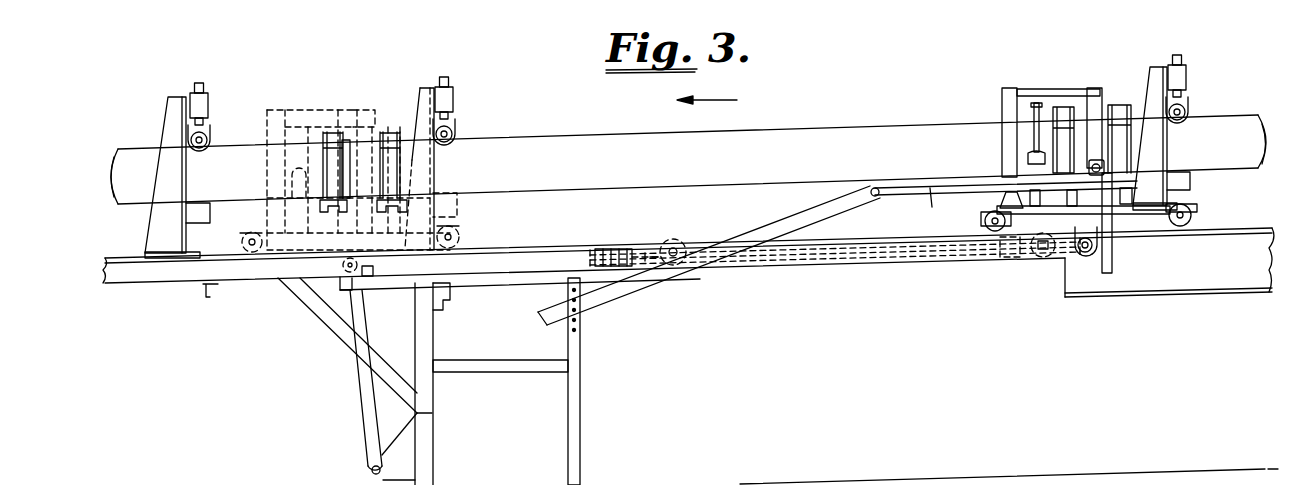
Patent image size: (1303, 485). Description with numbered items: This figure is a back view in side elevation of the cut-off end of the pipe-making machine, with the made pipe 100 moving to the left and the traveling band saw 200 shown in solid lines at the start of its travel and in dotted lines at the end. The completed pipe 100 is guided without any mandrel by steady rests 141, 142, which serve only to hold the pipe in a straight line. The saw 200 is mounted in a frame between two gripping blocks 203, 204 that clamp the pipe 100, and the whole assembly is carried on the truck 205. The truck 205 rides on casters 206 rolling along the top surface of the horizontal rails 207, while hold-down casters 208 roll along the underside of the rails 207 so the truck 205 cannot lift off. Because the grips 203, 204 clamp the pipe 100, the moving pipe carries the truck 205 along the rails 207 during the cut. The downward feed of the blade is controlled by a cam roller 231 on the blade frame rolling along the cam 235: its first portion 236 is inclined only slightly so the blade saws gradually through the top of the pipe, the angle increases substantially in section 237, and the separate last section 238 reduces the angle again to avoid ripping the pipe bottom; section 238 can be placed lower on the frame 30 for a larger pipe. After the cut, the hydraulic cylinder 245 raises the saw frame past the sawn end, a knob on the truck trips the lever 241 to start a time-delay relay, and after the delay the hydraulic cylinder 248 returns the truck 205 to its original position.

The frame 30 is at (433, 392).
The pipe 100 is at (812, 128).
The steady rest 141 is at (456, 96).
The steady rest 142 is at (208, 103).
The traveling metal band saw 200 is at (328, 135).
The gripping block 203 is at (1094, 88).
The gripping block 204 is at (1018, 71).
The truck 205 is at (457, 228).
The caster 206 is at (458, 247).
The horizontal rail 207 is at (1213, 227).
The hold-down caster 208 is at (333, 278).
The cam roller 231 is at (1100, 166).
The cam 235 is at (953, 227).
The first portion of cam 236 is at (986, 164).
The cam section 237 is at (782, 220).
The last cam section 238 is at (530, 270).
The lever 241 is at (365, 390).
The hydraulic cylinder 245 is at (1031, 160).
The hydraulic cylinder 248 is at (858, 262).